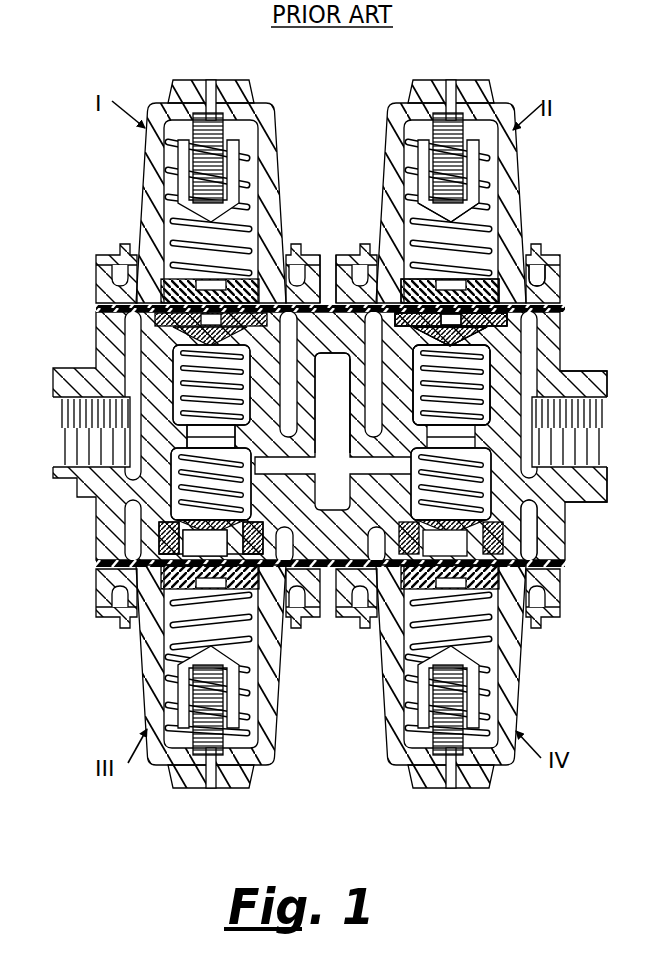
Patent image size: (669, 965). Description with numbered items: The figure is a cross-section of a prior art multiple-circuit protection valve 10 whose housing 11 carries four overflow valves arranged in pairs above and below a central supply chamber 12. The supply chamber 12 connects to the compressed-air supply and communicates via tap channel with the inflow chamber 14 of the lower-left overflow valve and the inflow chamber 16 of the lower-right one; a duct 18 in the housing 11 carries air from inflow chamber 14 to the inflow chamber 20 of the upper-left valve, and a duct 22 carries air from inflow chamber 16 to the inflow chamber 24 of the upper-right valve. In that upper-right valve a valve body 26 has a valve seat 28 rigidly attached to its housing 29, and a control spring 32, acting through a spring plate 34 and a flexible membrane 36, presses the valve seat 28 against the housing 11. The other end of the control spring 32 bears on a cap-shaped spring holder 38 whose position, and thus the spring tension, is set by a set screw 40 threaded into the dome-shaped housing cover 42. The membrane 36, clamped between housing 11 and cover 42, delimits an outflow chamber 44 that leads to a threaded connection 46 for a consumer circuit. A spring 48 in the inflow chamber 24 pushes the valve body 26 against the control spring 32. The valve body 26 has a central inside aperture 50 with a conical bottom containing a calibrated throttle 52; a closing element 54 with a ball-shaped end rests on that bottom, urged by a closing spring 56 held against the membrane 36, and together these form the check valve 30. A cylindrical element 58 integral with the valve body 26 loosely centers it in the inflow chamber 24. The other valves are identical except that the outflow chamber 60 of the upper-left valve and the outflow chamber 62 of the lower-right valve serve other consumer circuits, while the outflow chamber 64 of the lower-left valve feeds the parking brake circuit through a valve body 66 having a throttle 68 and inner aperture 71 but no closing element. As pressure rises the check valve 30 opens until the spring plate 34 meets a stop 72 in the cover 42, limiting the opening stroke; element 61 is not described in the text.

The protection valve 10 is at (560, 243).
The housing 11 is at (588, 380).
The supply chamber 12 is at (343, 449).
The inflow chamber 14 is at (178, 480).
The inflow chamber 16 is at (481, 471).
The duct 18 is at (222, 440).
The inflow chamber 20 is at (180, 393).
The duct 22 is at (416, 440).
The inflow chamber 24 is at (479, 392).
The valve body 26 is at (514, 313).
The valve seat 28 is at (428, 370).
The housing of the valve body 29 is at (420, 338).
The check valve 30 is at (519, 327).
The control spring 32 is at (479, 210).
The spring plate 34 is at (392, 290).
The flexible membrane 36 is at (548, 287).
The cap-shaped spring holder 38 is at (486, 152).
The set screw 40 is at (456, 120).
The housing cover 42 is at (506, 181).
The outflow chamber 44 is at (524, 409).
The connection 46 is at (595, 455).
The spring 48 is at (470, 380).
The central inside aperture 50 is at (396, 320).
The throttle 52 is at (478, 380).
The closing element 54 is at (396, 345).
The closing spring 56 is at (451, 290).
The cylindrical element 58 is at (442, 366).
The outflow chamber 60 is at (137, 408).
The port thread 61 is at (75, 458).
The outflow chamber 62 is at (524, 523).
The outflow chamber 64 is at (140, 532).
The valve body 66 is at (140, 550).
The throttle 68 is at (205, 543).
The inner aperture 71 is at (288, 535).
The stop 72 is at (533, 272).